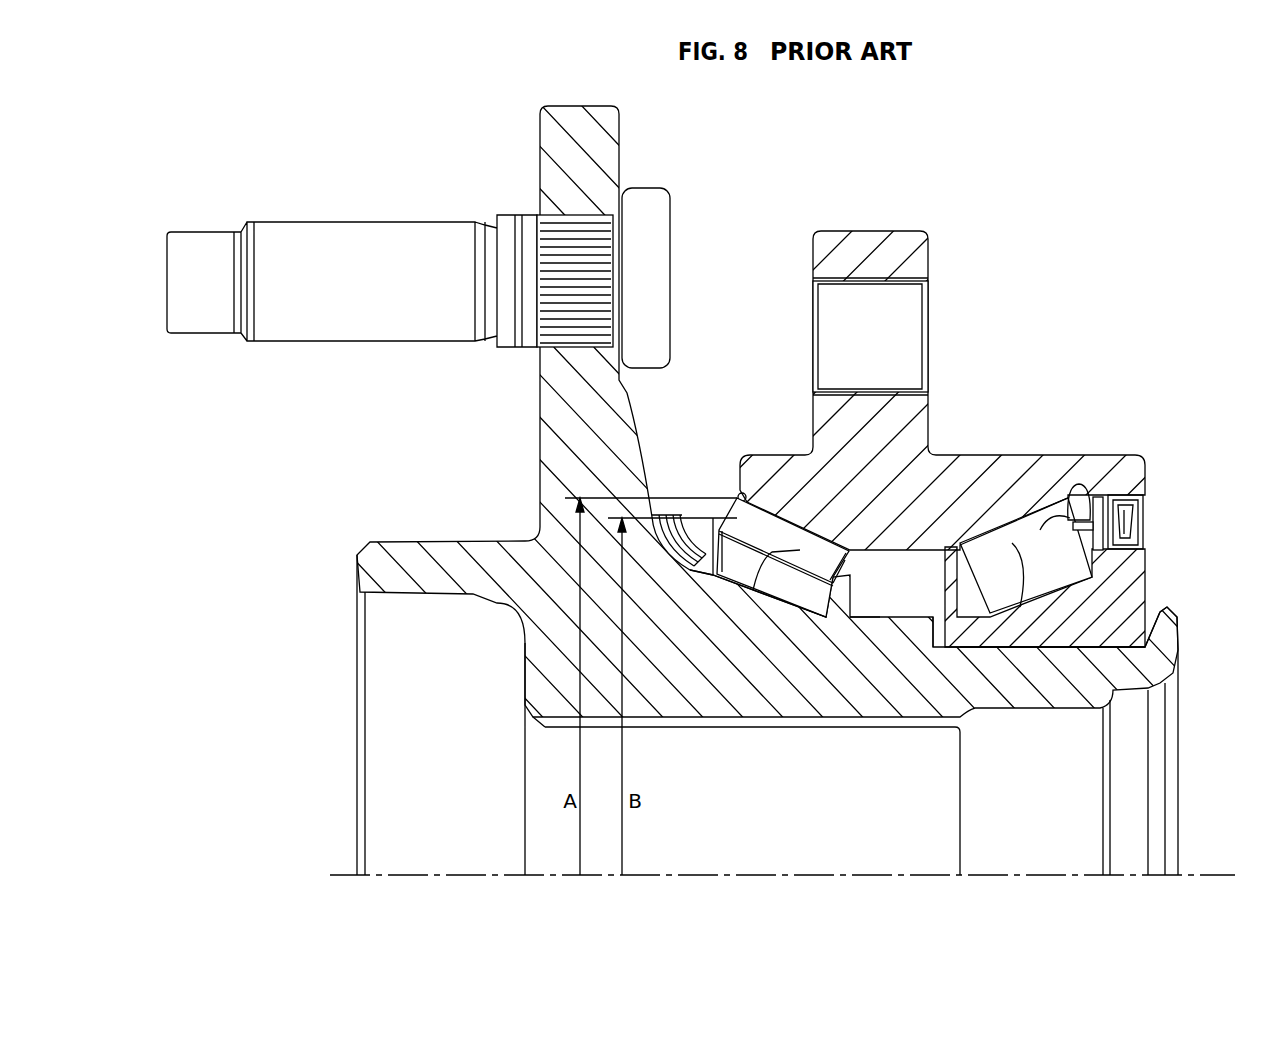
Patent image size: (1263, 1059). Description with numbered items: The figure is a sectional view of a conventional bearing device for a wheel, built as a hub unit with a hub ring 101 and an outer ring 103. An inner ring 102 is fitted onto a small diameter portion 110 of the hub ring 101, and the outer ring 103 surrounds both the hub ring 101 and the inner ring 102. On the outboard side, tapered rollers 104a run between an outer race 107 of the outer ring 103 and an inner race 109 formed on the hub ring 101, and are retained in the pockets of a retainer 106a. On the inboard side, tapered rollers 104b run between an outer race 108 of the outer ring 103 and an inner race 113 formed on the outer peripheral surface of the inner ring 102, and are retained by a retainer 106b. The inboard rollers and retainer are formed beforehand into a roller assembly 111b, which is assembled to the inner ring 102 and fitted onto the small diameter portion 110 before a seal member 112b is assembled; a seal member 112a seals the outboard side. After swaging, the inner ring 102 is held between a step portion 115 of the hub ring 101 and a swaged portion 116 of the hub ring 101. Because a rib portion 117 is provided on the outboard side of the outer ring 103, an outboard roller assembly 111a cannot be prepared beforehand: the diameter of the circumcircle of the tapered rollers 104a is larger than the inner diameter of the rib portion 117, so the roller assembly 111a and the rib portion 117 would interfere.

The hub ring 101 is at (548, 531).
The inner ring 102 is at (1135, 585).
The outer ring 103 is at (993, 453).
The tapered rollers (outboard side) 104a is at (772, 528).
The tapered rollers (inboard side) 104b is at (1027, 595).
The retainer (outboard side) 106a is at (750, 595).
The retainer (inboard side) 106b is at (997, 600).
The outer race (outboard side) 107 is at (823, 528).
The outer race (inboard side) 108 is at (1093, 512).
The inner race 109 is at (810, 592).
The small diameter portion 110 is at (1150, 596).
The roller assembly (outboard side) 111a is at (733, 590).
The roller assembly (inboard side) 111b is at (1035, 630).
The seal member (outboard side) 112a is at (652, 514).
The seal member (inboard side) 112b is at (1145, 512).
The inner race 113 is at (1000, 560).
The step portion 115 is at (943, 613).
The swaged portion 116 is at (1170, 647).
The rib portion 117 is at (695, 517).